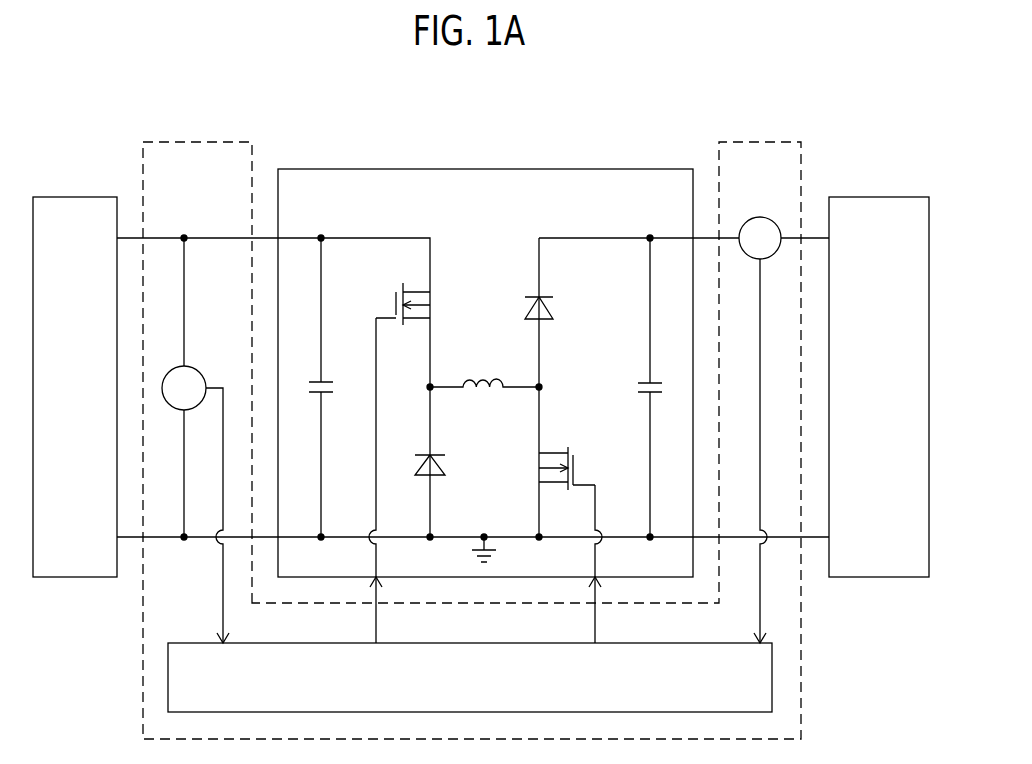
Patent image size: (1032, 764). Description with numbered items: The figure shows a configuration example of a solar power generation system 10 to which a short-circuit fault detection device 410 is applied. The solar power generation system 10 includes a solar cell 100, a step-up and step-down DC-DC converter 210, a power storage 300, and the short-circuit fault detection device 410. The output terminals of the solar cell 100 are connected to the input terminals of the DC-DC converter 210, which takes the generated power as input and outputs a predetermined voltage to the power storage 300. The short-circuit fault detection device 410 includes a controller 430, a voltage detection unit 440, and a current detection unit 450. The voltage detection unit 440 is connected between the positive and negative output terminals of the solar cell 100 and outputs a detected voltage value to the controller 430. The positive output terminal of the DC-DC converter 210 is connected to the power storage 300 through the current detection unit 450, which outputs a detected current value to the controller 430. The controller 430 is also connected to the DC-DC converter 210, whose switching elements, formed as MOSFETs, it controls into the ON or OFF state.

The solar power generation system 10 is at (833, 98).
The solar cell 100 is at (70, 197).
The step-up and step-down DC-DC converter 210 is at (567, 169).
The power storage 300 is at (872, 197).
The short-circuit fault detection device 410 is at (200, 142).
The controller 430 is at (478, 643).
The voltage detection unit 440 is at (200, 368).
The current detection unit 450 is at (762, 216).